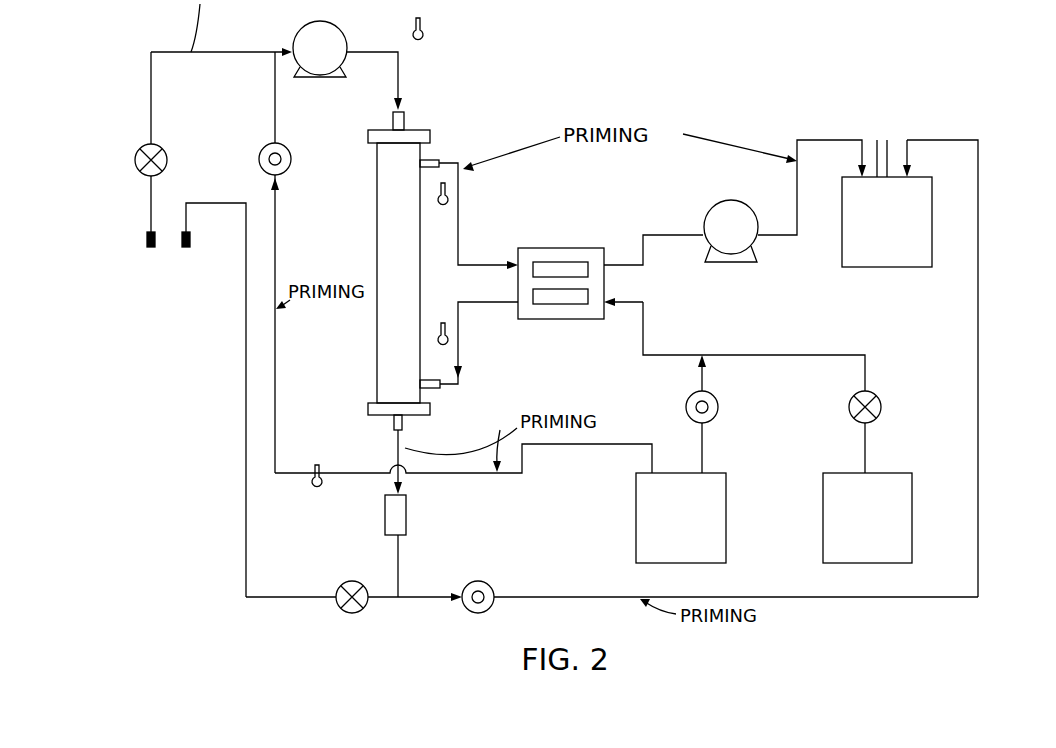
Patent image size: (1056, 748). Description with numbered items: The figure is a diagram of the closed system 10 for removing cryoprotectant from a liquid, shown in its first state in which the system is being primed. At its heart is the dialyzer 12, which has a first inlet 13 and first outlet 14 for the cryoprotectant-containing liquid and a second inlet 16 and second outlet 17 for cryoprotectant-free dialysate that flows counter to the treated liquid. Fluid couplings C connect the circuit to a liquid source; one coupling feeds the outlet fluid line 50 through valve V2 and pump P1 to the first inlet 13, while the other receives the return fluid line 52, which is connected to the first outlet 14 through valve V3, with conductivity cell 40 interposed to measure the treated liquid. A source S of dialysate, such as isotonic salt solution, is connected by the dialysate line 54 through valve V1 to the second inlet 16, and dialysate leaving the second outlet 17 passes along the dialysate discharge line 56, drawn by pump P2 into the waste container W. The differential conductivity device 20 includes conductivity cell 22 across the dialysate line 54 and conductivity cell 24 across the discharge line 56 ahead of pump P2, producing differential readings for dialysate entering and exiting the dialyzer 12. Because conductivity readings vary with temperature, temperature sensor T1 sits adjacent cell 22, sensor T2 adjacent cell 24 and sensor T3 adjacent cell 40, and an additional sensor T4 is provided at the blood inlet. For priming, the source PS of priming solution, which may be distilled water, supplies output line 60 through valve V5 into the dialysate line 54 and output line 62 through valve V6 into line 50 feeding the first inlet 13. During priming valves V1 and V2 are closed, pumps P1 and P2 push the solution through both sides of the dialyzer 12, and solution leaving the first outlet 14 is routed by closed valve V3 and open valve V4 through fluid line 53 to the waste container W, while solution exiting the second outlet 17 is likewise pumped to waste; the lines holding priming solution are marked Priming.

The closed system 10 is at (616, 84).
The dialyzer 12 is at (372, 246).
The first inlet 13 is at (406, 118).
The first outlet 14 is at (404, 441).
The second inlet 16 is at (440, 390).
The second outlet 17 is at (430, 160).
The differential conductivity device 20 is at (612, 242).
The conductivity cell 22 is at (560, 305).
The conductivity cell 24 is at (563, 268).
The conductivity cell 40 is at (406, 515).
The outlet fluid line 50 is at (221, 30).
The return fluid line 52 is at (275, 600).
The fluid line 53 is at (978, 500).
The dialysate line 54 is at (793, 355).
The dialysate discharge line 56 is at (460, 235).
The output line 60 is at (704, 447).
The output line 62 is at (570, 448).
The pump P1 is at (320, 38).
The pump P2 is at (731, 220).
The valve V1 is at (879, 424).
The valve V2 is at (166, 142).
The valve V3 is at (352, 583).
The valve V4 is at (478, 582).
The valve V5 is at (718, 414).
The valve V6 is at (287, 262).
The temperature sensor T1 is at (442, 210).
The temperature sensor T2 is at (439, 318).
The temperature sensor T3 is at (317, 496).
The temperature sensor T4 is at (433, 22).
The fluid couplings C is at (170, 256).
The waste container W is at (897, 255).
The source of priming solution PS is at (727, 526).
The source of cryoprotectant-free liquid S is at (905, 528).